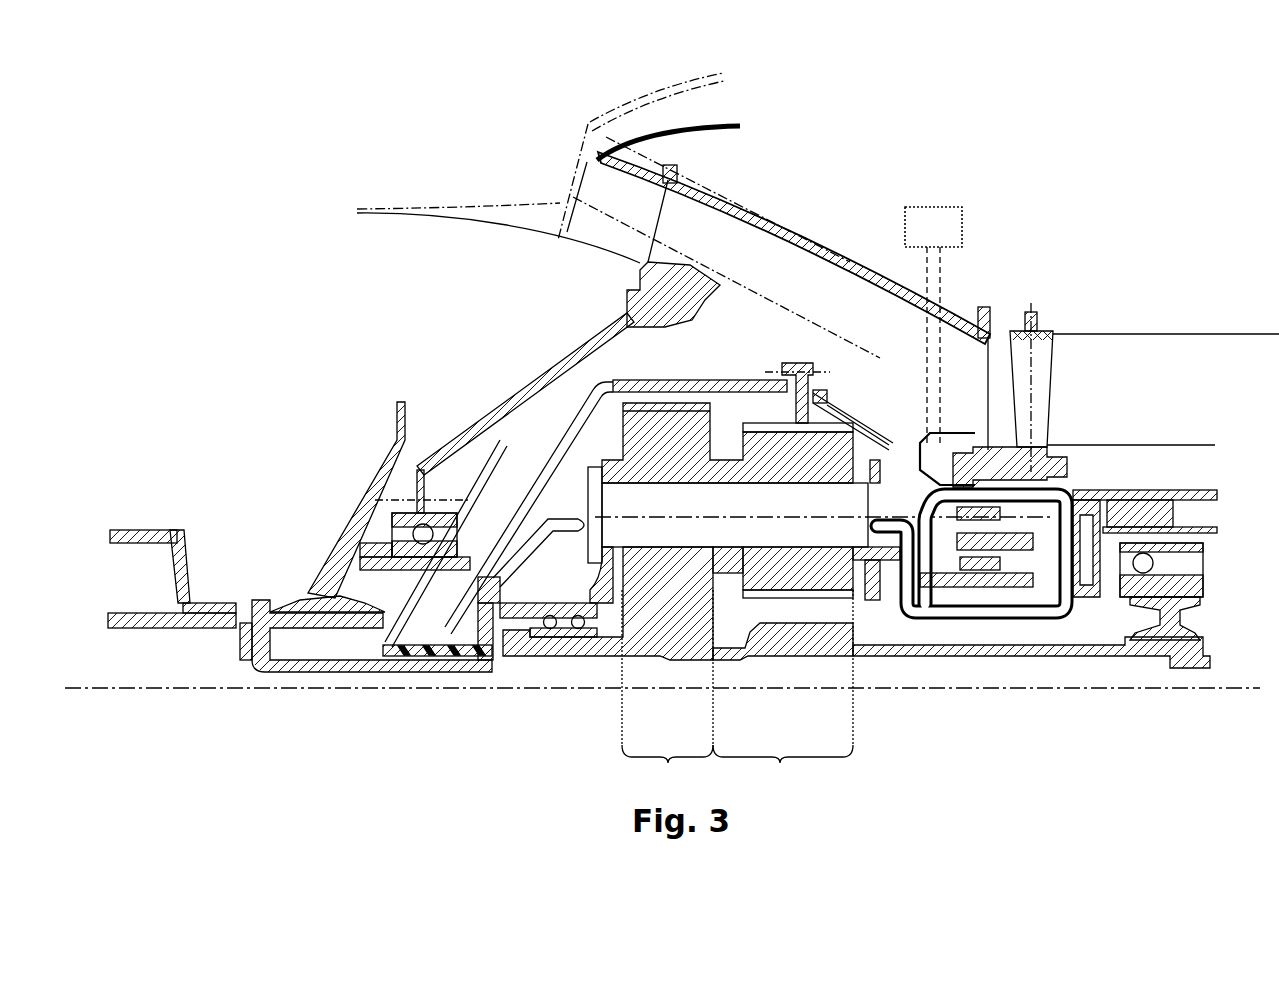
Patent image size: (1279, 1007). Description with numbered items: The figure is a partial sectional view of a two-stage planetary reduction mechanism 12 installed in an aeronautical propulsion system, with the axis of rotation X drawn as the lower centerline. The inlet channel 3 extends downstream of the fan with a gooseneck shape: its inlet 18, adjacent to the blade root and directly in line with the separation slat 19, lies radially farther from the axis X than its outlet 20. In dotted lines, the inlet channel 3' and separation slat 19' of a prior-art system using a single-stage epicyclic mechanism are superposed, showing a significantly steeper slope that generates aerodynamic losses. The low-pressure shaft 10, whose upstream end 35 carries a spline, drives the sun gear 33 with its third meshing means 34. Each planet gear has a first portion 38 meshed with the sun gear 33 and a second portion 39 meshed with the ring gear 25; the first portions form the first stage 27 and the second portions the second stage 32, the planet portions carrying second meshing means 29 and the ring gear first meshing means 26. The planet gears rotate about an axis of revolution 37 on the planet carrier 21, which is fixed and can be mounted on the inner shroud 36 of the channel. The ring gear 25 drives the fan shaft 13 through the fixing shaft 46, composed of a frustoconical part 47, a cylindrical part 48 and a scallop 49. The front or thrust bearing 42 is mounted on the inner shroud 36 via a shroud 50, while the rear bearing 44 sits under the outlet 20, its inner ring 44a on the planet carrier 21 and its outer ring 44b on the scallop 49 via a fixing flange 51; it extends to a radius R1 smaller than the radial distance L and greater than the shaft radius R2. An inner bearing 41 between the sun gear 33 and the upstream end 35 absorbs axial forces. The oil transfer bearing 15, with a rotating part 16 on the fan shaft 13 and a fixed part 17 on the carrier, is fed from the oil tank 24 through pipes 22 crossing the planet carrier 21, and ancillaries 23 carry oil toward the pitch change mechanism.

The inlet channel 3 is at (617, 212).
The inlet channel of prior-art system 3' is at (627, 102).
The low-pressure shaft 10 is at (1040, 657).
The reduction mechanism 12 is at (735, 405).
The fan shaft 13 is at (268, 600).
The oil transfer bearing 15 is at (1066, 393).
The rotating part 16 is at (455, 657).
The fixed part 17 is at (485, 657).
The inlet 18 is at (646, 217).
The separation slat 19 is at (632, 148).
The separation slat of prior-art system 19' is at (618, 84).
The outlet 20 is at (1003, 362).
The planet carrier 21 is at (1000, 657).
The pipes 22 is at (1088, 527).
The ancillaries 23 is at (390, 672).
The oil tank 24 is at (933, 327).
The ring gear 25 is at (828, 402).
The first meshing means 26 is at (880, 437).
The first stage 27 is at (667, 688).
The second meshing means 29 is at (798, 427).
The second stage 32 is at (783, 688).
The sun gear 33 is at (720, 660).
The third meshing means 34 is at (668, 660).
The upstream end 35 is at (868, 657).
The inner shroud 36 is at (733, 309).
The axis of revolution 37 is at (655, 515).
The first portion 38 is at (678, 531).
The second portion 39 is at (821, 530).
The inner bearing 41 is at (566, 652).
The front bearing 42 is at (386, 511).
The rear bearing 44 is at (1070, 602).
The inner ring 44a is at (960, 587).
The outer ring 44b is at (1032, 562).
The fixing shaft 46 is at (521, 471).
The frustoconical part 47 is at (561, 452).
The cylindrical part 48 is at (690, 381).
The scallop 49 is at (800, 363).
The shroud 50 is at (486, 402).
The fixing flange 51 is at (892, 440).
The radial distance L is at (730, 487).
The radius of rear bearing R1 is at (978, 560).
The radius of low-pressure shaft R2 is at (1063, 658).
The axis of rotation X is at (1257, 688).